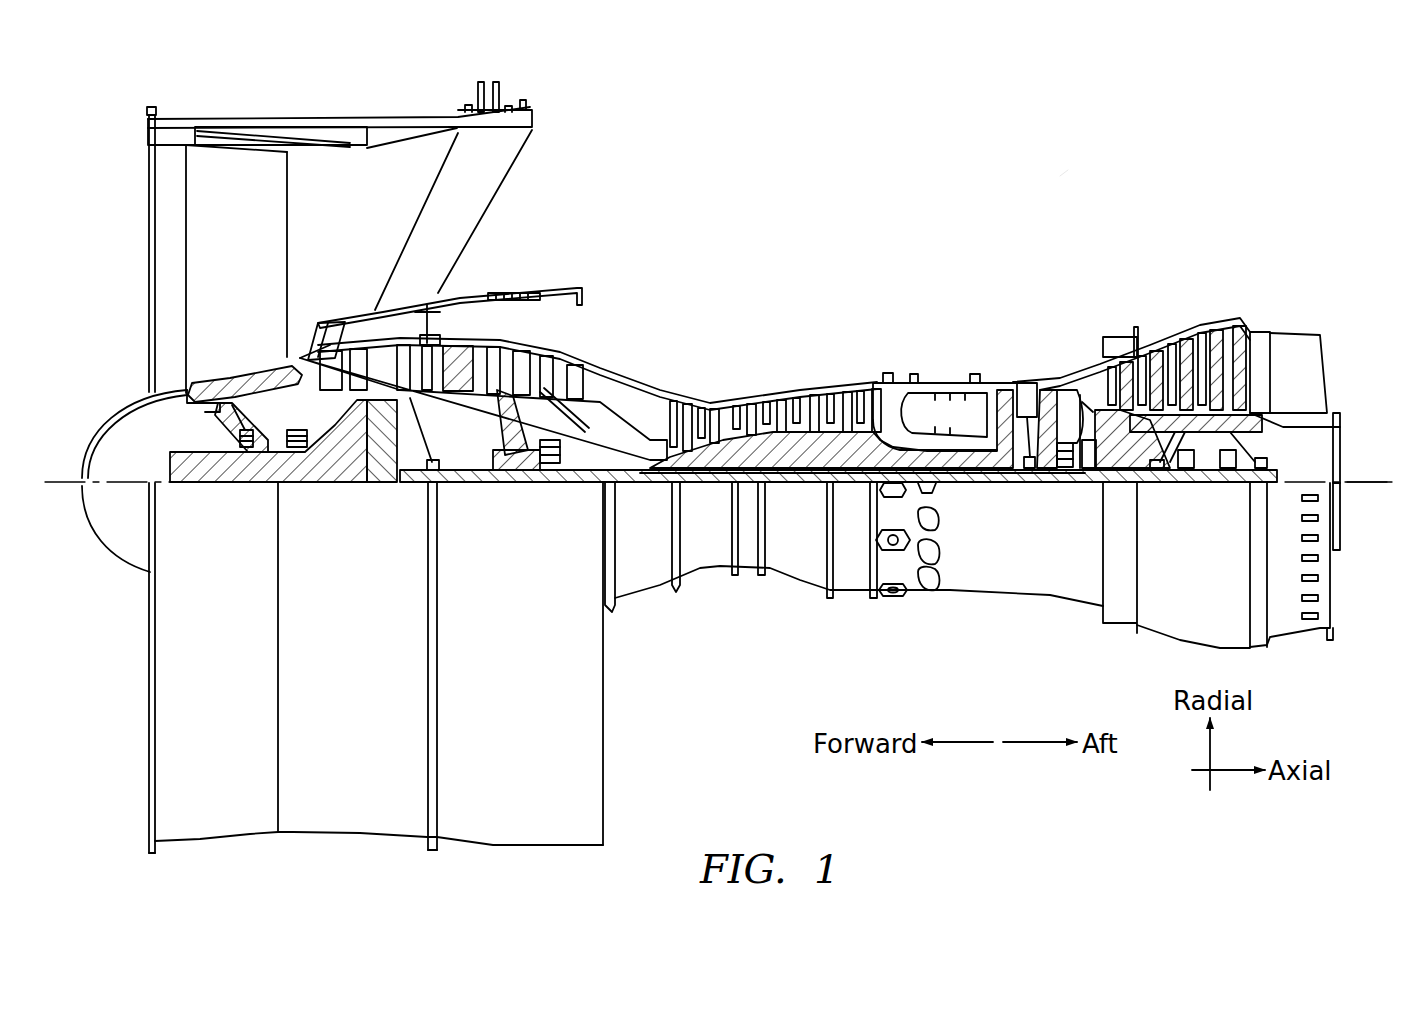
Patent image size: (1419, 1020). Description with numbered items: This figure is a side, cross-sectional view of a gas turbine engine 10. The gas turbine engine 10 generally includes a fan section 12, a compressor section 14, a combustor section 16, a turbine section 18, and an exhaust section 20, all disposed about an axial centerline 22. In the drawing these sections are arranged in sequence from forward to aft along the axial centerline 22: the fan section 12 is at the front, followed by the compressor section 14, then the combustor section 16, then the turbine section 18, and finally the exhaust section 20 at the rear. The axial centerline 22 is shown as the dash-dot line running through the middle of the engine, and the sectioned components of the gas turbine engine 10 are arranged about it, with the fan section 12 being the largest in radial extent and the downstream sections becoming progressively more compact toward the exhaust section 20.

The gas turbine engine 10 is at (1070, 170).
The fan section 12 is at (140, 95).
The compressor section 14 is at (440, 275).
The combustor section 16 is at (882, 275).
The turbine section 18 is at (1260, 275).
The exhaust section 20 is at (1262, 275).
The central longitudinal axis 22 is at (1381, 480).